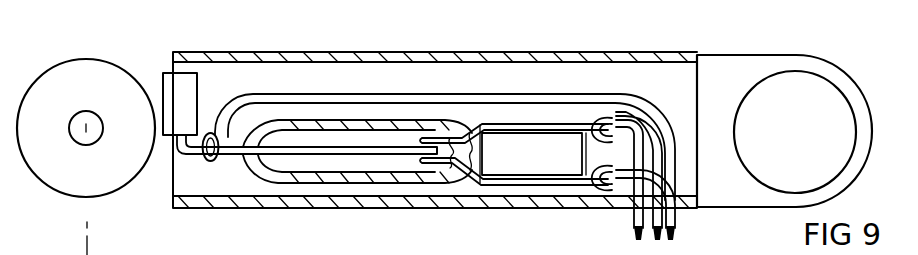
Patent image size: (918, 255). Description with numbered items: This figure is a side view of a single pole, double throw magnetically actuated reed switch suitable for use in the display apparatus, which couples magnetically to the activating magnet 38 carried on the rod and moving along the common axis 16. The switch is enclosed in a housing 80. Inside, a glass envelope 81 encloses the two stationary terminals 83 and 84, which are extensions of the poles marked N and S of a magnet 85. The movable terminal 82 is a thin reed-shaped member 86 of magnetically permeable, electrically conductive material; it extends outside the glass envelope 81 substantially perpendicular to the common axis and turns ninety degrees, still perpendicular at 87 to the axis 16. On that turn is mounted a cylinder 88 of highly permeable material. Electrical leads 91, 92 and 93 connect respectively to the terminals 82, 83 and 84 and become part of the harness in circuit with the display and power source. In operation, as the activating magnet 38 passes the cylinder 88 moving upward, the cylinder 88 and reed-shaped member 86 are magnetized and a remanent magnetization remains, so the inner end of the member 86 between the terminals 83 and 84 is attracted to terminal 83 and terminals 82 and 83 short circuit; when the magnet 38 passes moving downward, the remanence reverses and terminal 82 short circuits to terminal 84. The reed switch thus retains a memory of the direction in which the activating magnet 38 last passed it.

The common axis 16 is at (87, 245).
The activating magnet 38 is at (96, 58).
The housing 80 is at (581, 53).
The glass envelope 81 is at (324, 173).
The terminal 82 is at (293, 142).
The terminal 83 is at (425, 140).
The terminal 84 is at (427, 163).
The magnet 85 is at (550, 142).
The reed-shaped member 86 is at (395, 150).
The ninety degree turn 87 is at (170, 140).
The cylinder 88 is at (182, 88).
The electrical lead 91 is at (602, 96).
The electrical lead 92 is at (636, 120).
The electrical lead 93 is at (648, 146).